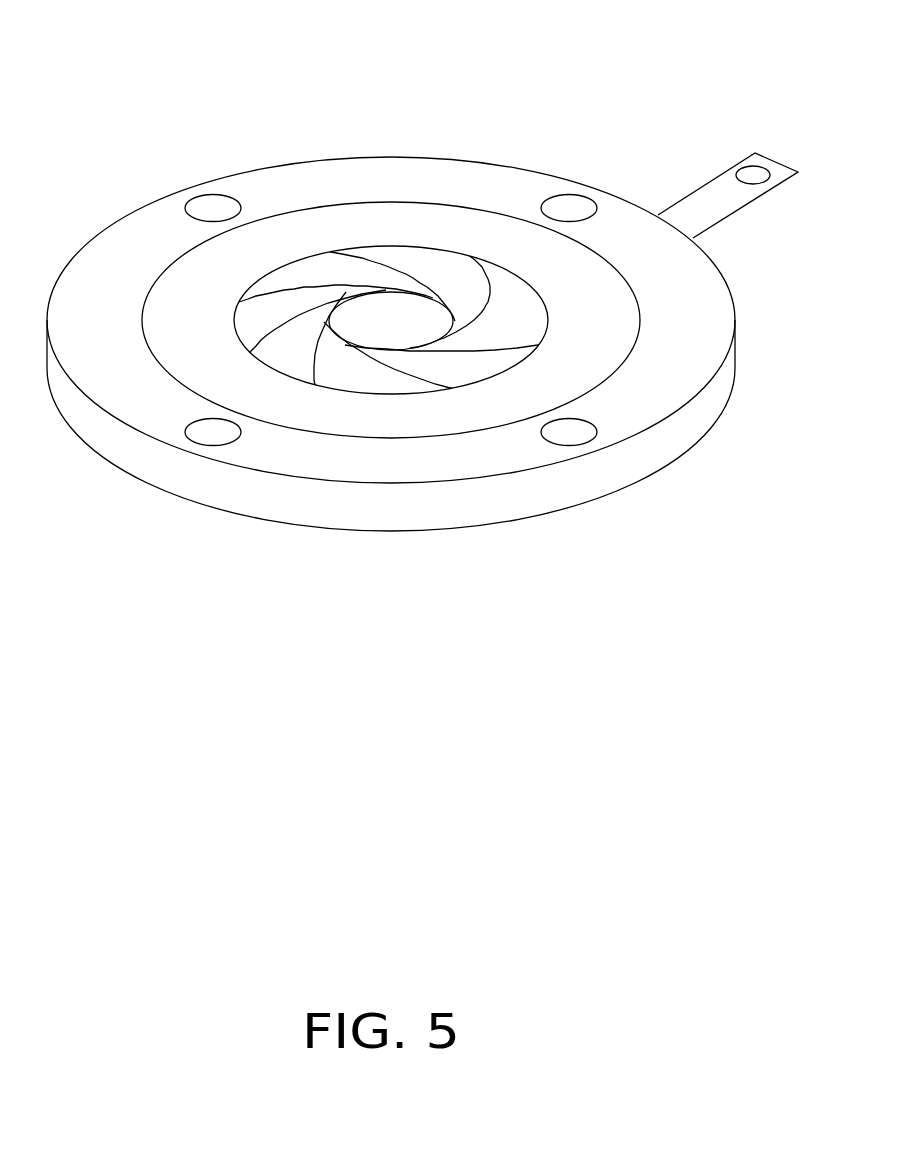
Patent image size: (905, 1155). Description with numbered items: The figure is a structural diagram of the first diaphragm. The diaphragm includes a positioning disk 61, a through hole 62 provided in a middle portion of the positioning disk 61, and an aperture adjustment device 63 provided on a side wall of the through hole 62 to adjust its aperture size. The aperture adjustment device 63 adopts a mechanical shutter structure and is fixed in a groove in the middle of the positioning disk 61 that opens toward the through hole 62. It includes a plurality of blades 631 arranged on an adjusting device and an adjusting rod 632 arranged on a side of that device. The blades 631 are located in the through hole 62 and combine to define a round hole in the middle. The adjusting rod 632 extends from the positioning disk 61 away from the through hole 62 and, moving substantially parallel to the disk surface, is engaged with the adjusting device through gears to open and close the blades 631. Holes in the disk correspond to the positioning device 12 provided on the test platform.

The positioning device 12 is at (213, 208).
The positioning disk 61 is at (125, 255).
The through hole 62 is at (407, 317).
The aperture adjustment device 63 is at (731, 86).
The blades 631 is at (490, 282).
The adjusting rod 632 is at (712, 208).